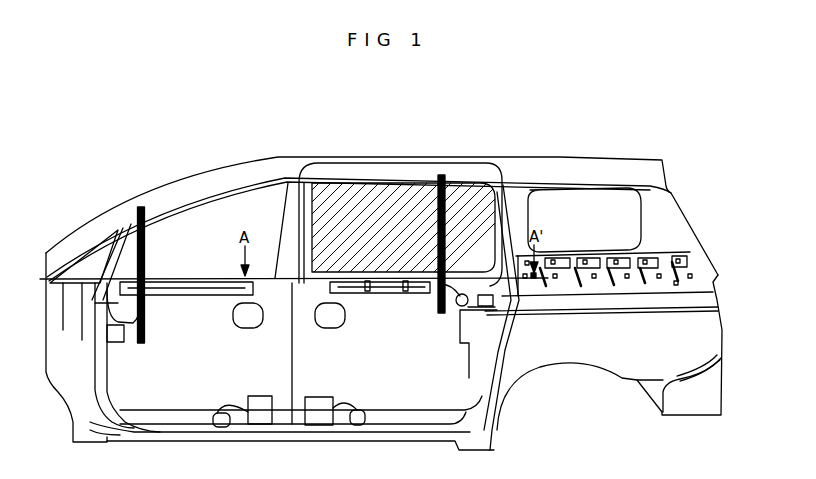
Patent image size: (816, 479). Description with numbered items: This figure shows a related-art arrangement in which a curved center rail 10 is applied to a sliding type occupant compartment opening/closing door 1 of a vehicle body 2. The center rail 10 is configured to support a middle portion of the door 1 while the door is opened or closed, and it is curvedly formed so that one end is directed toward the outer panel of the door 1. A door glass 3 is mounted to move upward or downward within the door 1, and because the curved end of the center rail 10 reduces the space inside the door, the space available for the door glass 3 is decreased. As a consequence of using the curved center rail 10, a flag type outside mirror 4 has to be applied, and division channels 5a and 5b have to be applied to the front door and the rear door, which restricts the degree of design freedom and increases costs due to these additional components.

The door 1 is at (402, 176).
The vehicle body 2 is at (268, 164).
The door glass 3 is at (348, 195).
The flag type outside mirror 4 is at (80, 340).
The division channel 5a is at (137, 235).
The division channel 5b is at (446, 216).
The center rail 10 is at (200, 292).